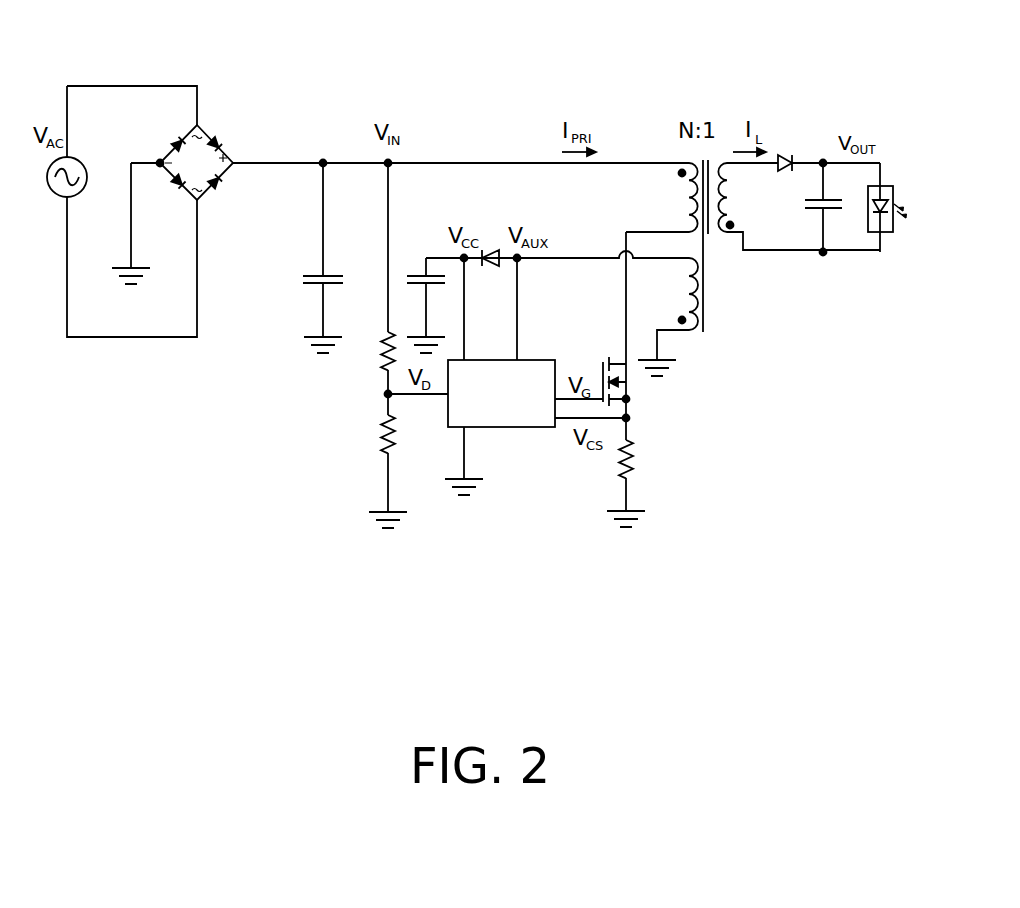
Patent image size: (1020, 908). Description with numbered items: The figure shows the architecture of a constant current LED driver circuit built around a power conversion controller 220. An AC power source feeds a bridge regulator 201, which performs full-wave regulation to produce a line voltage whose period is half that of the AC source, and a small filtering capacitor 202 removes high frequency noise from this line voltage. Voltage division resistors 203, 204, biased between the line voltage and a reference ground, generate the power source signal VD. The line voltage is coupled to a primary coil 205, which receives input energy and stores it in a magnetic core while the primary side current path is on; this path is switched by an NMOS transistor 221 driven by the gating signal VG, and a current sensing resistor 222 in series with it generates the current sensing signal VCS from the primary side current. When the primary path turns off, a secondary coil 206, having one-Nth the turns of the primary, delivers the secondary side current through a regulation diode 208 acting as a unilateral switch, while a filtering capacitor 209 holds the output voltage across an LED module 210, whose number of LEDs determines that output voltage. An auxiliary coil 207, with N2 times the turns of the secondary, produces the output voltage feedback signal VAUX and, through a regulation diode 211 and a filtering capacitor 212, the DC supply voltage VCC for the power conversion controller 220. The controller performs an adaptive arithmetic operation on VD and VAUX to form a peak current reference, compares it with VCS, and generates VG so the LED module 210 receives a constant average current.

The bridge regulator 201 is at (210, 125).
The filtering capacitor 202 is at (315, 263).
The voltage division resistor 203 is at (382, 360).
The voltage division resistor 204 is at (382, 435).
The primary coil 205 is at (688, 203).
The secondary coil 206 is at (730, 187).
The auxiliary coil 207 is at (682, 328).
The regulation diode 208 is at (790, 157).
The filtering capacitor 209 is at (813, 210).
The LED module 210 is at (872, 223).
The regulation diode 211 is at (492, 250).
The filtering capacitor 212 is at (415, 265).
The power conversion controller 220 is at (545, 360).
The NMOS transistor 221 is at (632, 387).
The current sensing resistor 222 is at (633, 452).